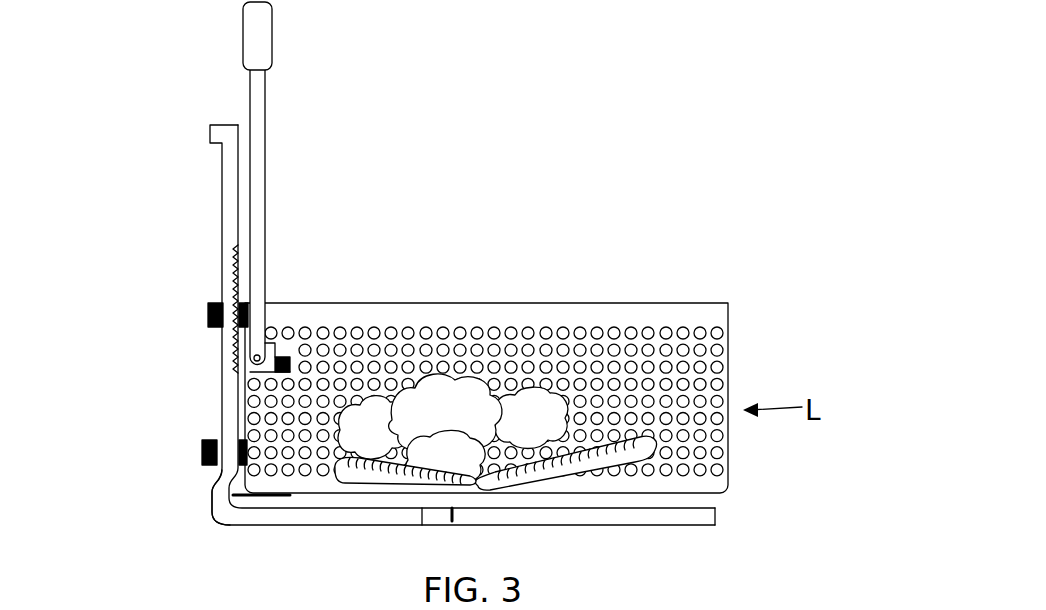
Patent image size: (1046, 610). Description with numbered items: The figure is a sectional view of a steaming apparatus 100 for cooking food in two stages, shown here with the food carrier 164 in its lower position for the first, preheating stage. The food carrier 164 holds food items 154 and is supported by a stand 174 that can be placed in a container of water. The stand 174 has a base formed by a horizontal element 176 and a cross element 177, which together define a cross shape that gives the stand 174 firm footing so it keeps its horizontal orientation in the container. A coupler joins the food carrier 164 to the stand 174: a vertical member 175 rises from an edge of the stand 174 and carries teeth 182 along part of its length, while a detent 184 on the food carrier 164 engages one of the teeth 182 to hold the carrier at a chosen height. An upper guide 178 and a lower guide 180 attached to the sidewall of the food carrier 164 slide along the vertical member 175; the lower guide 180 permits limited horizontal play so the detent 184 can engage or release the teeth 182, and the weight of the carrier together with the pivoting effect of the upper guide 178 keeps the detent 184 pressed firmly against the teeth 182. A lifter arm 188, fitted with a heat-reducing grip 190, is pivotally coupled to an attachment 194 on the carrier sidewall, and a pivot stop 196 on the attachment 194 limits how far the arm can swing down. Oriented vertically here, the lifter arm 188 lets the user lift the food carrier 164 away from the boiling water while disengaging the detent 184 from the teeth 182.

The steaming apparatus 100 is at (150, 203).
The food items 154 is at (478, 380).
The food carrier 164 is at (728, 320).
The stand 174 is at (200, 525).
The vertical member 175 is at (222, 388).
The horizontal element 176 is at (568, 520).
The cross element 177 is at (433, 520).
The upper guide 178 is at (208, 322).
The lower guide 180 is at (202, 458).
The teeth 182 is at (240, 263).
The detent 184 is at (240, 498).
The lifter arm 188 is at (266, 135).
The grip 190 is at (273, 36).
The attachment 194 is at (273, 345).
The pivot stop 196 is at (291, 358).